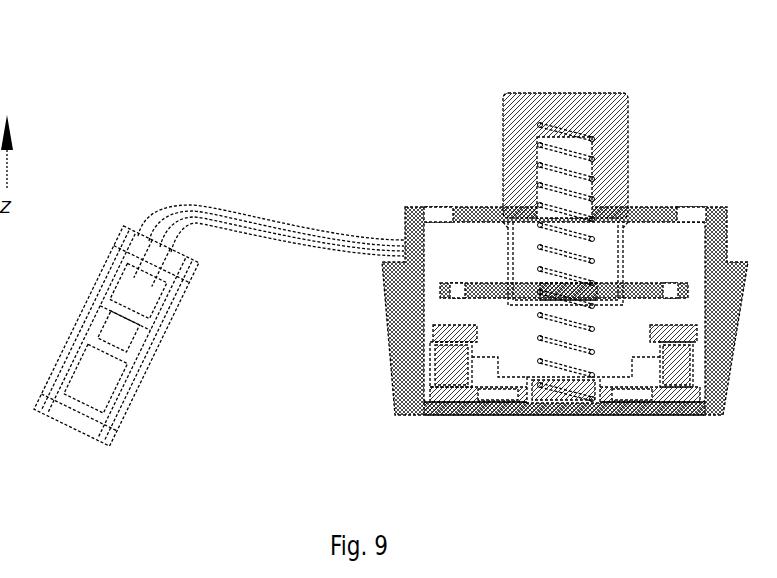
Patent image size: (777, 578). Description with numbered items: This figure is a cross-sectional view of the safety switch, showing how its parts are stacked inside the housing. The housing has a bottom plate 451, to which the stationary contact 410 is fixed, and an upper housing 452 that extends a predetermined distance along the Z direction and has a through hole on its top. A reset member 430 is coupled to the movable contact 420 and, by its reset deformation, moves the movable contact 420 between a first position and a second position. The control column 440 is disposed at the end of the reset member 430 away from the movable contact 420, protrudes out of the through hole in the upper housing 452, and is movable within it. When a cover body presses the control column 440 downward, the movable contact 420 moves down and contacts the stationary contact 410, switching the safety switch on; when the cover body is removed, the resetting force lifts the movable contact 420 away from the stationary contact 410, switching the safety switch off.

The stationary contact 410 is at (408, 342).
The movable contact 420 is at (655, 280).
The reset member 430 is at (503, 177).
The control column 440 is at (615, 125).
The bottom plate 451 is at (558, 402).
The upper housing 452 is at (408, 392).